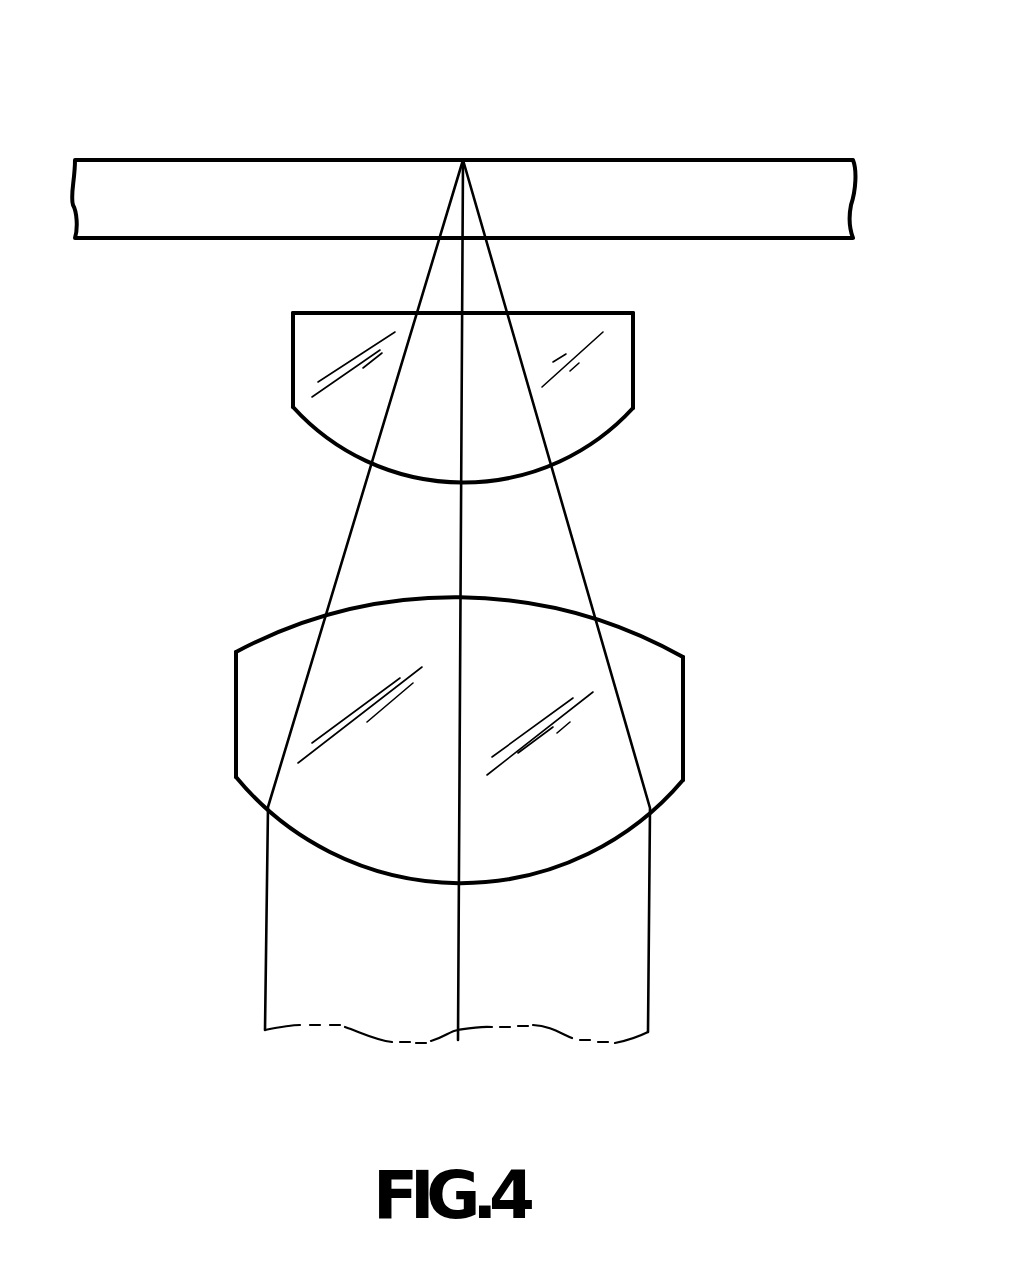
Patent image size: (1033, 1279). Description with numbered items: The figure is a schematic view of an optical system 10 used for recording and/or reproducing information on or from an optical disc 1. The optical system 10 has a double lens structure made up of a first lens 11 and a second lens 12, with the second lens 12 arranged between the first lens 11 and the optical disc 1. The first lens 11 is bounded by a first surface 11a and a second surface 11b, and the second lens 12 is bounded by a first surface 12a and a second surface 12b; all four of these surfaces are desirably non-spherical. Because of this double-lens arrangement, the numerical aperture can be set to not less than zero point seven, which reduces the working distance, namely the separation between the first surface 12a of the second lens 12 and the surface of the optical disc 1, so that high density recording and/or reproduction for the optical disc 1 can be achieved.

The optical disc 1 is at (610, 176).
The optical system 10 is at (743, 102).
The first lens 11 is at (660, 695).
The first surface of the first lens 11a is at (638, 632).
The second surface of the first lens 11b is at (613, 843).
The second lens 12 is at (612, 358).
The first surface of the second lens 12a is at (593, 312).
The second surface of the second lens 12b is at (612, 437).